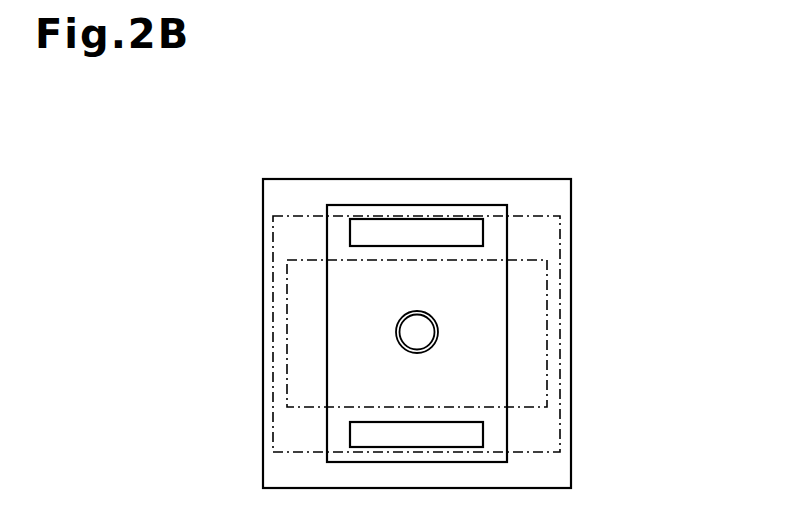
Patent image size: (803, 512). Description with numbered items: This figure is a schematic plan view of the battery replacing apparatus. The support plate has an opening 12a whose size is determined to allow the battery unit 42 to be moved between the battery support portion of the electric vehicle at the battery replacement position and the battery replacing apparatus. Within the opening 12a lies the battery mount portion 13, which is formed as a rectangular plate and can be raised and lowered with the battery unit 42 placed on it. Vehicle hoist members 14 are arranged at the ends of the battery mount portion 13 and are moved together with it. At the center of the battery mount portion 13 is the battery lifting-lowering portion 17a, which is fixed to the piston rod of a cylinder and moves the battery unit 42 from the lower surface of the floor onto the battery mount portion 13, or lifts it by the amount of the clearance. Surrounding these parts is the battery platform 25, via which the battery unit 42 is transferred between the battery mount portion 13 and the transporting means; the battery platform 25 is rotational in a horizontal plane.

The battery platform 25 is at (553, 179).
The opening 12a is at (551, 243).
The battery unit 42 is at (547, 313).
The battery mount portion 13 is at (492, 205).
The vehicle hoist members 14 is at (363, 238).
The battery lifting-lowering portion 17a is at (420, 340).